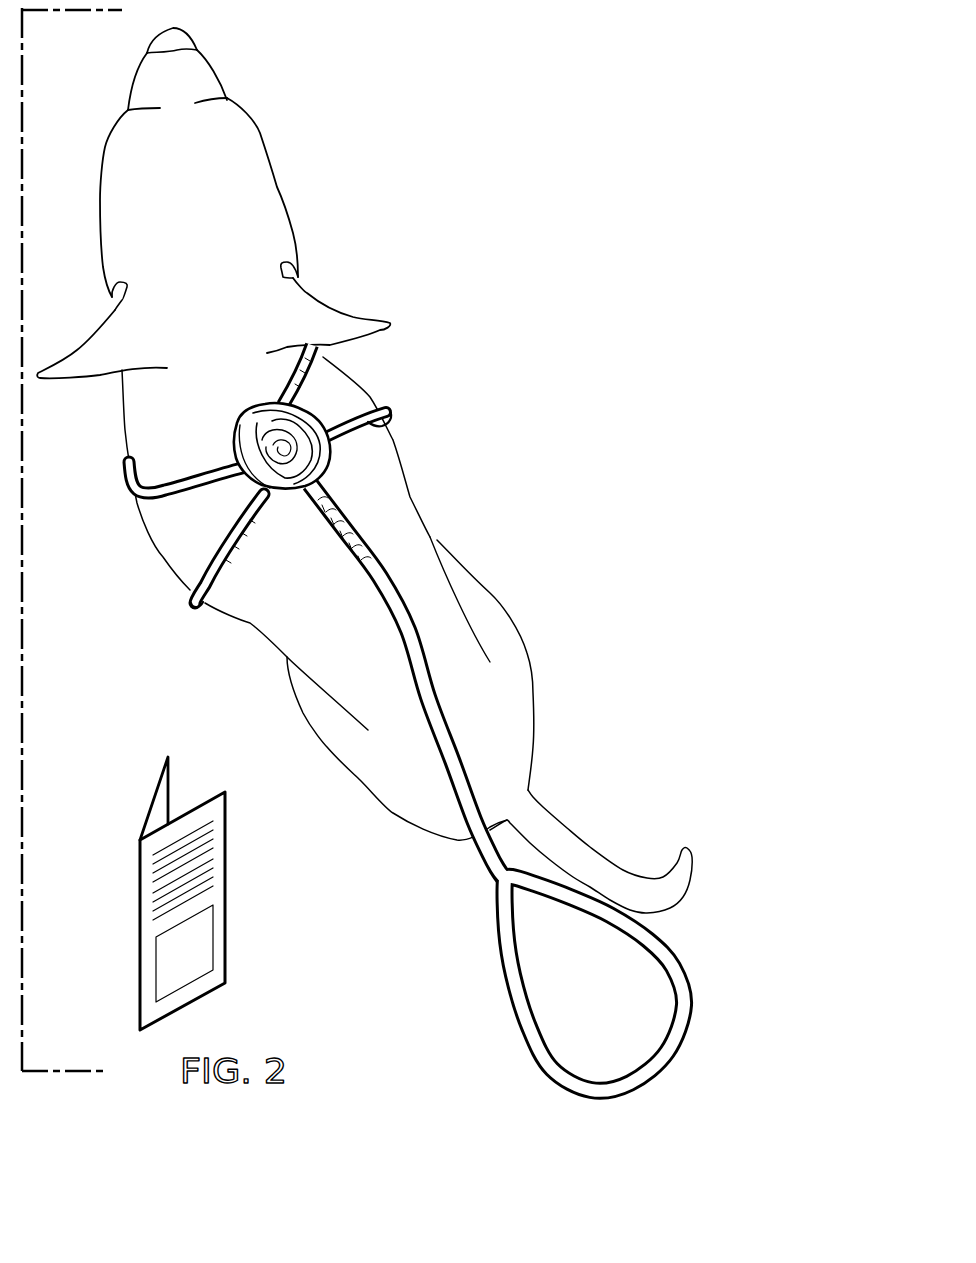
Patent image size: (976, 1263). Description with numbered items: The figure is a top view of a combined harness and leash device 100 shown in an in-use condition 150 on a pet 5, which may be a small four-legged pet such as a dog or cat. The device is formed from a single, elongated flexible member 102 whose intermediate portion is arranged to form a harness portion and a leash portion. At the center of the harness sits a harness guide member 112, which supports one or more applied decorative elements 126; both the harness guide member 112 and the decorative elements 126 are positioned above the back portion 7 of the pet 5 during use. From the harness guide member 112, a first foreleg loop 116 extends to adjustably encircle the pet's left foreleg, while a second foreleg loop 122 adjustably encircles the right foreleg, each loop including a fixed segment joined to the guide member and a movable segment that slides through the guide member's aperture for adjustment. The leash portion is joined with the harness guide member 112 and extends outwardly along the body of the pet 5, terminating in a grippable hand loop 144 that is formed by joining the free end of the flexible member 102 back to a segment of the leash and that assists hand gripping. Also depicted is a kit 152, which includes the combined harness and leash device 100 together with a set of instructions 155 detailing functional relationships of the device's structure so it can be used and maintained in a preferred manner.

The pet 5 is at (493, 590).
The back portion 7 is at (228, 488).
The combined harness and leash device 100 is at (440, 387).
The elongated flexible member 102 is at (155, 625).
The harness guide member 112 is at (190, 430).
The first foreleg loop 116 is at (127, 477).
The second foreleg loop 122 is at (323, 362).
The applied decorative element 126 is at (327, 460).
The grippable hand loop 144 is at (677, 960).
The in-use condition 150 is at (473, 297).
The kit 152 is at (257, 953).
The set of instructions 155 is at (150, 803).